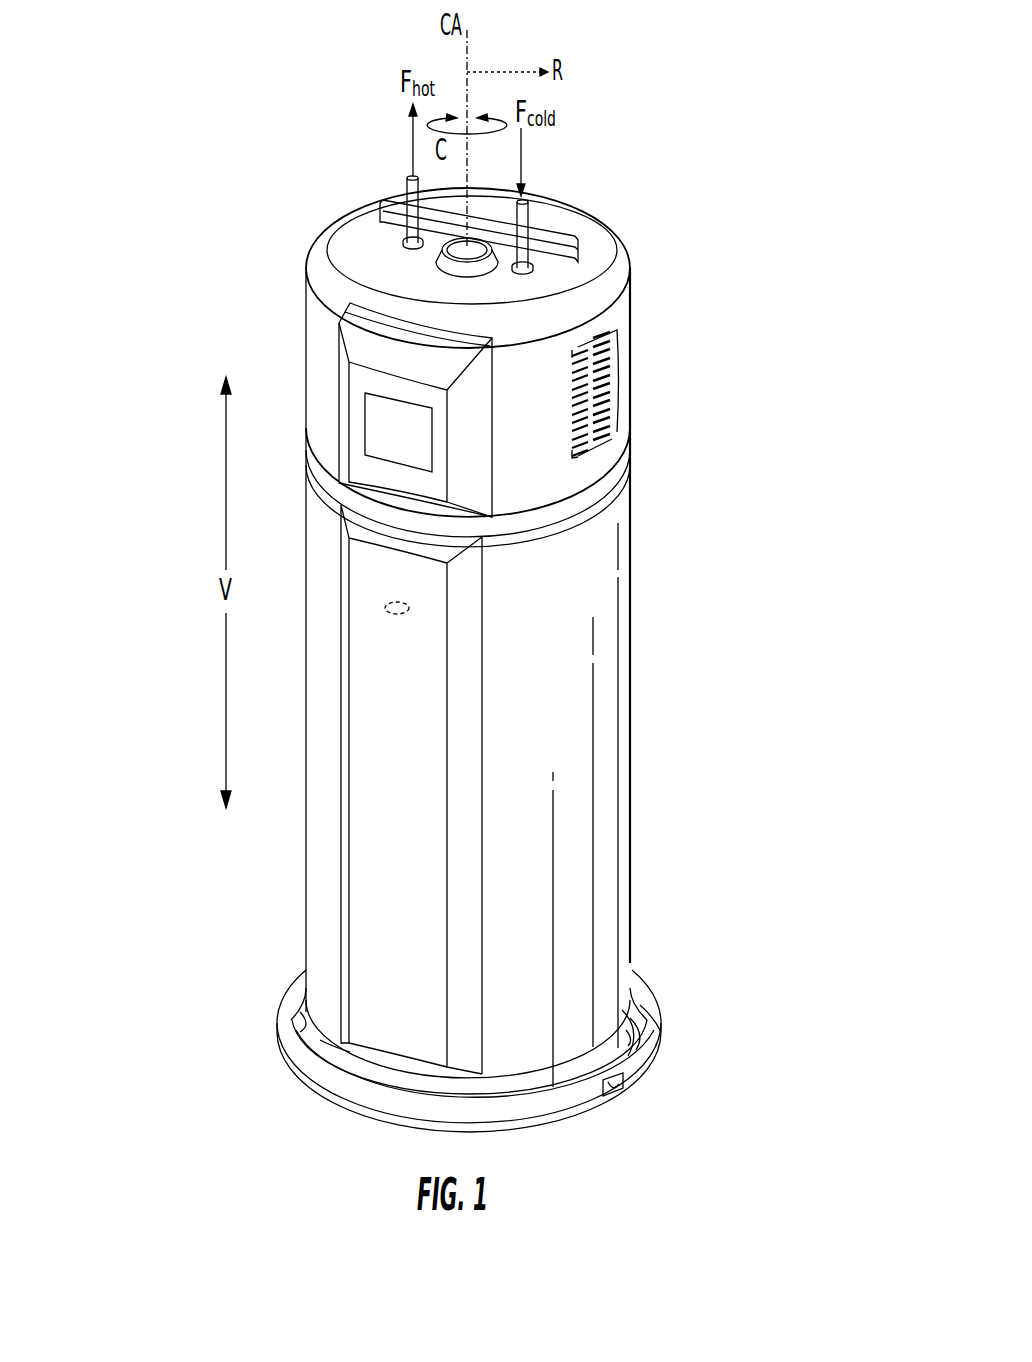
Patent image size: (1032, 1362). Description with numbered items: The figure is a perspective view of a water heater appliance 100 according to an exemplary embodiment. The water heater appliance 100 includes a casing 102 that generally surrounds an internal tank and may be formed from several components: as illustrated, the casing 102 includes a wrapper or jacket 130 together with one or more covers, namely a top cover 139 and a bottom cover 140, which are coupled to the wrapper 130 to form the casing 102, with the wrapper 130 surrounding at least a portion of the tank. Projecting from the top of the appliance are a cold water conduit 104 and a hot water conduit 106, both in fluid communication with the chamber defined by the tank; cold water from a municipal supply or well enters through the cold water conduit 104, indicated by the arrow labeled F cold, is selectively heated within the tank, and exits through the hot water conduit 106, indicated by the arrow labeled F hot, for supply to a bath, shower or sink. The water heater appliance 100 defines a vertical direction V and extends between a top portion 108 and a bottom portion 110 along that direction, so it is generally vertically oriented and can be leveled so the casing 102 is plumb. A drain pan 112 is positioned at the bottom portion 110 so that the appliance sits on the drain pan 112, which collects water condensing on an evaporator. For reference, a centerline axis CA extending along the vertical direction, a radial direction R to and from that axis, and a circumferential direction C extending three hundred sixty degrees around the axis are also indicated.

The water heater appliance 100 is at (660, 211).
The casing 102 is at (608, 595).
The cold water conduit 104 is at (528, 216).
The hot water conduit 106 is at (407, 192).
The top portion 108 is at (284, 252).
The bottom portion 110 is at (264, 999).
The drain pan 112 is at (663, 1013).
The wrapper 130 is at (607, 770).
The top cover 139 is at (317, 379).
The bottom cover 140 is at (348, 1057).